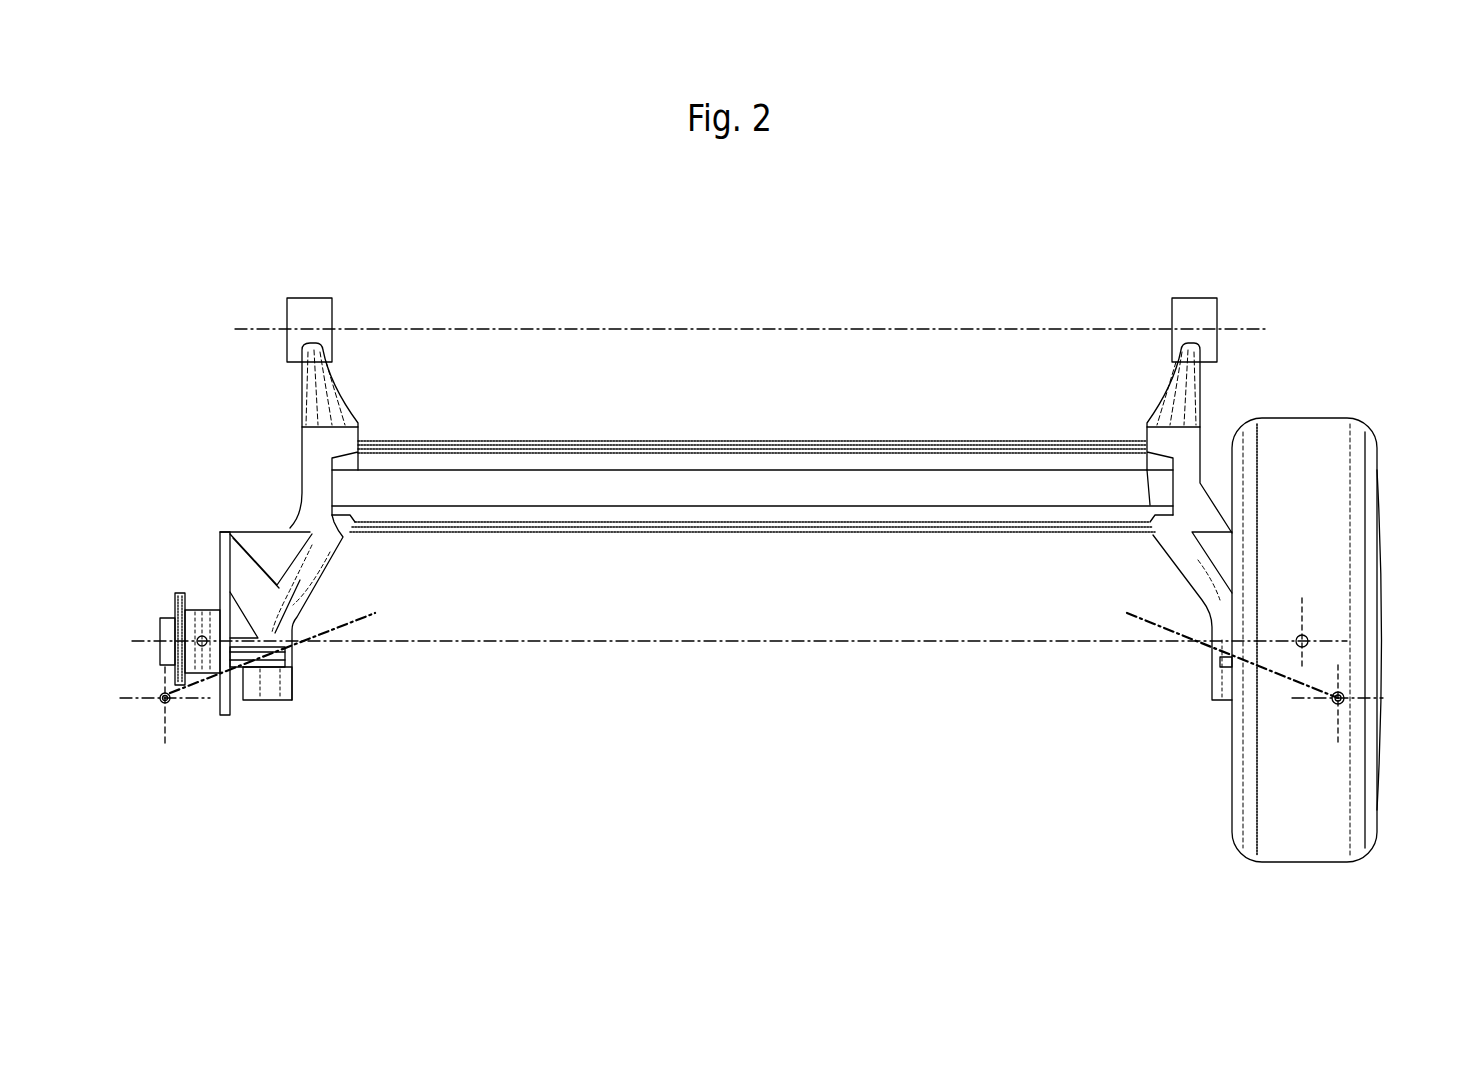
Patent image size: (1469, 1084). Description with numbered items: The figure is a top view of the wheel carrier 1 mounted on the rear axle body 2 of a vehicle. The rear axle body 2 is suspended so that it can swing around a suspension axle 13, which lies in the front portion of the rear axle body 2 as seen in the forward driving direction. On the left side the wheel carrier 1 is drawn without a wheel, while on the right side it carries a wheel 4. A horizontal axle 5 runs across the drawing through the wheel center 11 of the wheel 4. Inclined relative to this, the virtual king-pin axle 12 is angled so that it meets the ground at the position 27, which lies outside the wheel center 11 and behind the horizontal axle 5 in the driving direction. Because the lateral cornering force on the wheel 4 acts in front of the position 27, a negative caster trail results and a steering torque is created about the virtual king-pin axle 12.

The wheel carrier 1 is at (242, 740).
The rear axle body 2 is at (738, 462).
The wheel 4 is at (1302, 416).
The horizontal axle 5 is at (703, 639).
The wheel center 11 is at (1306, 636).
The virtual king-pin axle 12 is at (1127, 613).
The suspension axle 13 is at (982, 328).
The position where the virtual king-pin axle coincides with ground 27 is at (1330, 700).